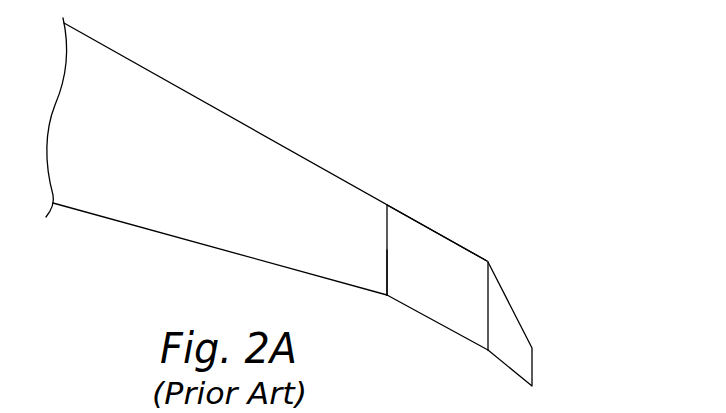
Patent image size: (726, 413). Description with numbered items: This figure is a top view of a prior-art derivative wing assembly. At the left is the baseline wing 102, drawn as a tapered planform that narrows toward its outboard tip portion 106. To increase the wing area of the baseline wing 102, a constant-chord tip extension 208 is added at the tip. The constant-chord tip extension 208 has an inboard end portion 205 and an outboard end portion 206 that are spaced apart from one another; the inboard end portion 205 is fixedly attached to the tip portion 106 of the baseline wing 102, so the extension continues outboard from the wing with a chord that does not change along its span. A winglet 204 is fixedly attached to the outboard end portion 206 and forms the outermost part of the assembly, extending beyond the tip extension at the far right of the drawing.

The baseline wing 102 is at (126, 226).
The tip portion 106 is at (388, 231).
The inboard end portion 205 is at (386, 278).
The constant-chord tip extension 208 is at (433, 323).
The outboard end portion 206 is at (490, 292).
The winglet 204 is at (533, 364).